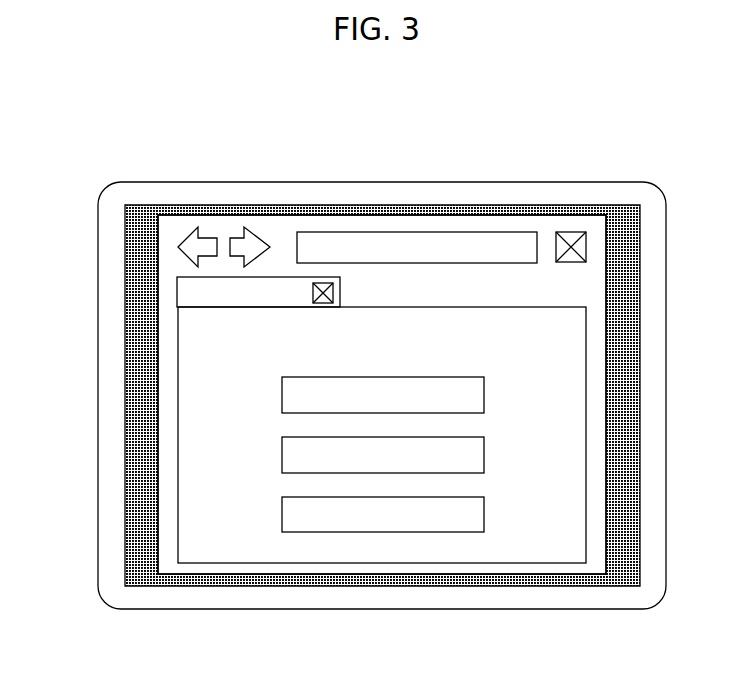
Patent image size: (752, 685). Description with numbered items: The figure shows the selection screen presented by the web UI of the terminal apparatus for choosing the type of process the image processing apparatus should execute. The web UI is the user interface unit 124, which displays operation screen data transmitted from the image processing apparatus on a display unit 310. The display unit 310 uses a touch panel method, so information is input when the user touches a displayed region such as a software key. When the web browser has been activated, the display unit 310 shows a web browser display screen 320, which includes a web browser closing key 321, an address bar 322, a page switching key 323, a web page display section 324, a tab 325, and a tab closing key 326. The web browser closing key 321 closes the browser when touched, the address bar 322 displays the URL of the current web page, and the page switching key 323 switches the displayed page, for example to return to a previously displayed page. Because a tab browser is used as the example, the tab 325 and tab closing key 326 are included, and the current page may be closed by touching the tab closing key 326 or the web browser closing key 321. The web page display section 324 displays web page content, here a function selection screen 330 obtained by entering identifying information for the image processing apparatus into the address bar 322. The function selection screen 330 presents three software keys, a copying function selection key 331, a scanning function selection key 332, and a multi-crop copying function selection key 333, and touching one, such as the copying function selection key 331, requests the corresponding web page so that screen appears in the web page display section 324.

The user interface unit 124 is at (368, 610).
The display unit 310 is at (640, 475).
The web browser display screen 320 is at (365, 215).
The web browser closing key 321 is at (586, 243).
The address bar 322 is at (540, 240).
The page switching key 323 is at (183, 236).
The web page display section 324 is at (586, 348).
The tab 325 is at (228, 277).
The tab closing key 326 is at (312, 290).
The function selection screen 330 is at (232, 348).
The copying function selection key 331 is at (282, 398).
The scanning function selection key 332 is at (282, 458).
The multi-crop copying function selection key 333 is at (282, 517).